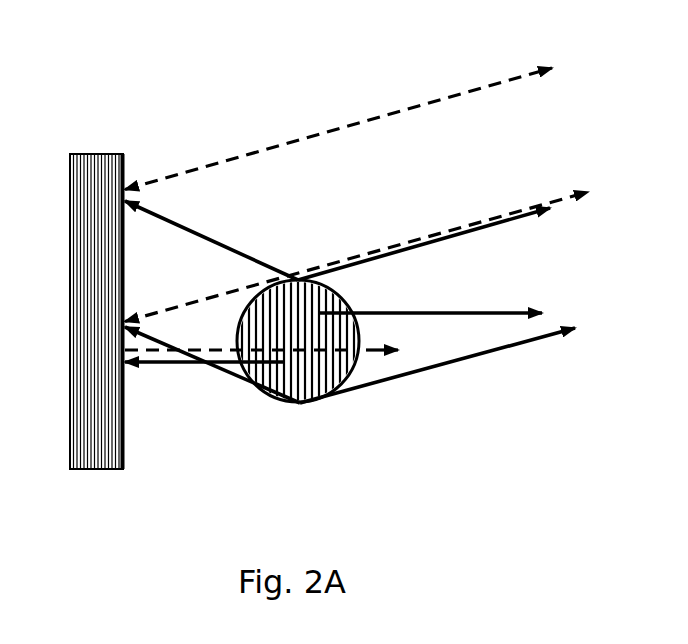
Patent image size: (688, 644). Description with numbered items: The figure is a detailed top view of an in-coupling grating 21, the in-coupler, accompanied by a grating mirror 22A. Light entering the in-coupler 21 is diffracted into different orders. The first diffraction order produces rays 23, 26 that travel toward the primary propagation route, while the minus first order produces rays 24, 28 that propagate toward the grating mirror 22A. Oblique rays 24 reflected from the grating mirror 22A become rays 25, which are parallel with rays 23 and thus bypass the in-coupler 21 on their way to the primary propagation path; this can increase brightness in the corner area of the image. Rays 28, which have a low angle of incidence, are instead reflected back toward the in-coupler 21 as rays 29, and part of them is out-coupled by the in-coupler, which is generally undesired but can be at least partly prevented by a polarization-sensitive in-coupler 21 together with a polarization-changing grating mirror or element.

The in-coupling grating 21 is at (307, 401).
The grating mirror 22A is at (92, 423).
The rays 23 is at (436, 344).
The oblique rays 24 is at (211, 202).
The rays 25 is at (356, 195).
The rays 26 is at (507, 314).
The rays 28 is at (142, 364).
The rays 29 is at (221, 366).